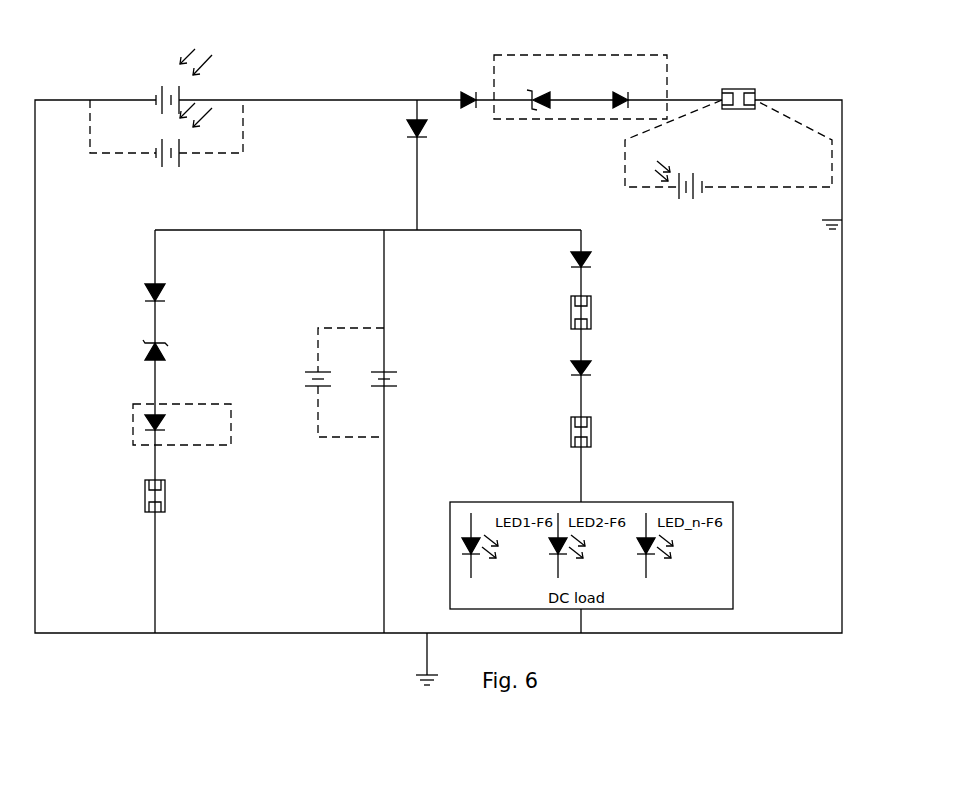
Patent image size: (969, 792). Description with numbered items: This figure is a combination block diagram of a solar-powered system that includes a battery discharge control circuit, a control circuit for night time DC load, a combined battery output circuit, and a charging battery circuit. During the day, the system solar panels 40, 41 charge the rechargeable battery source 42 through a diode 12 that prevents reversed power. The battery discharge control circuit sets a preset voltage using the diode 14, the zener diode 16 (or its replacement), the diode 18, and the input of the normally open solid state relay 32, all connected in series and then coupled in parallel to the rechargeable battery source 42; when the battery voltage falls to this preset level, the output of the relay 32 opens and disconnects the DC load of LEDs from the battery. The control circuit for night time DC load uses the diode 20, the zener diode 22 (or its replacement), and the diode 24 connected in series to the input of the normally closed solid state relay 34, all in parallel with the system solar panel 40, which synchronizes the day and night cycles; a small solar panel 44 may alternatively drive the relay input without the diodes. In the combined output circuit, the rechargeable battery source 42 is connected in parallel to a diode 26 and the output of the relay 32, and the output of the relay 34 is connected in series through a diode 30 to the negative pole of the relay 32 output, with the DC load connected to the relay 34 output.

The system solar panel 40 is at (123, 81).
The system solar panel 41 is at (150, 145).
The diode 20 is at (460, 89).
The zener diode 22 is at (580, 87).
The diode 24 is at (639, 88).
The diode 12 is at (395, 129).
The normally closed solid state relay 34 is at (724, 254).
The small solar panel 44 is at (728, 149).
The diode 14 is at (181, 292).
The zener diode 16 is at (210, 354).
The diode 18 is at (182, 424).
The normally open solid state relay 32 is at (424, 408).
The rechargeable battery source 42 is at (350, 382).
The diode 26 is at (606, 260).
The diode 30 is at (606, 369).